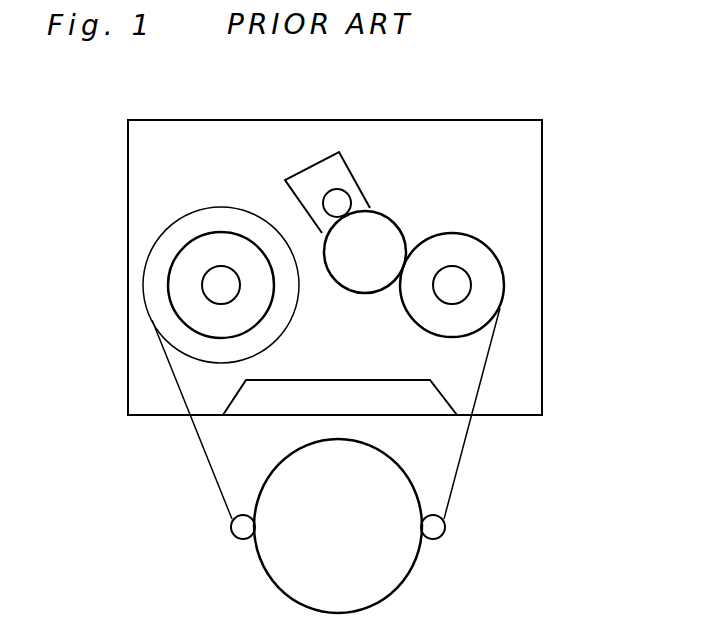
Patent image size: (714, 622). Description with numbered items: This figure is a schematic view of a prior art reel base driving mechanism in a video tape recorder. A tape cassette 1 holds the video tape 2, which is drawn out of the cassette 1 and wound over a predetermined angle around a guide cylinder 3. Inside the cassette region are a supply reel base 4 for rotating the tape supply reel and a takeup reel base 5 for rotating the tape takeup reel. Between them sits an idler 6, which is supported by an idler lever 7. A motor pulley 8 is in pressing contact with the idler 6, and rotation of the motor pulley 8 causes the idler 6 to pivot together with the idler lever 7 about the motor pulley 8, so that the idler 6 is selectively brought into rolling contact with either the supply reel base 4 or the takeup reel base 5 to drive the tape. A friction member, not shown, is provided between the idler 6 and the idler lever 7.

The tape cassette 1 is at (542, 248).
The video tape 2 is at (473, 418).
The guide cylinder 3 is at (398, 557).
The supply reel base 4 is at (470, 245).
The takeup reel base 5 is at (202, 248).
The idler 6 is at (358, 283).
The idler lever 7 is at (333, 165).
The motor pulley 8 is at (338, 200).